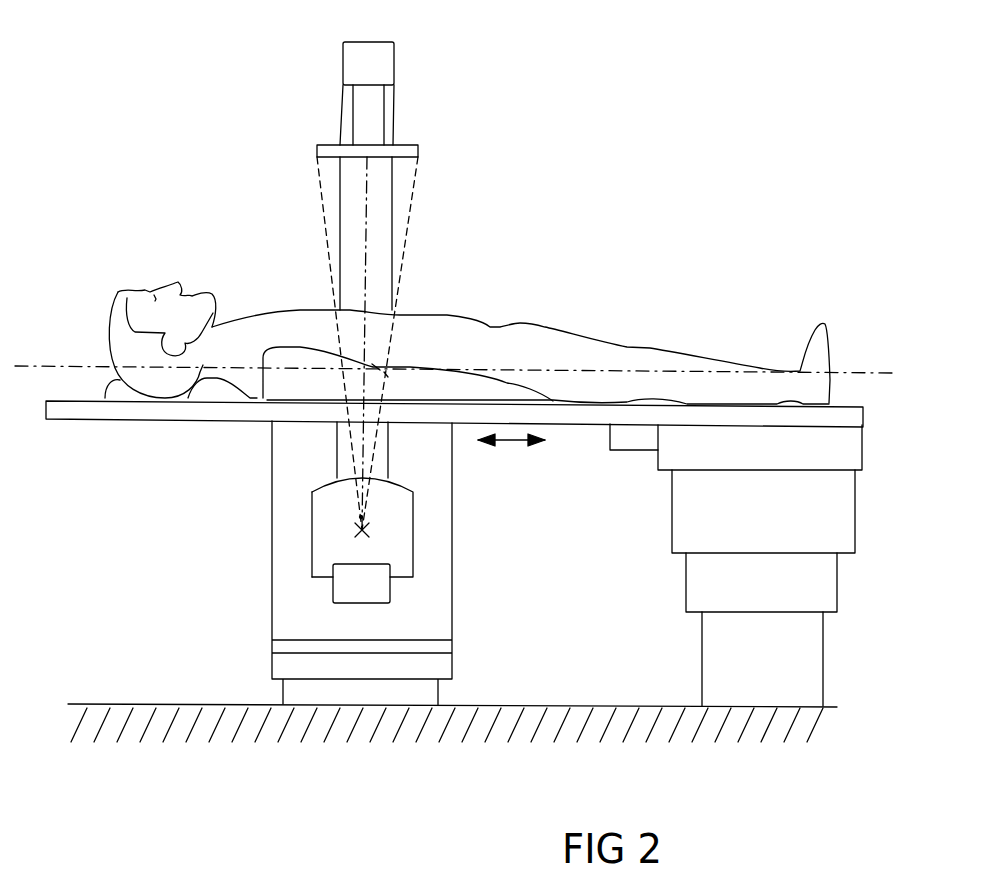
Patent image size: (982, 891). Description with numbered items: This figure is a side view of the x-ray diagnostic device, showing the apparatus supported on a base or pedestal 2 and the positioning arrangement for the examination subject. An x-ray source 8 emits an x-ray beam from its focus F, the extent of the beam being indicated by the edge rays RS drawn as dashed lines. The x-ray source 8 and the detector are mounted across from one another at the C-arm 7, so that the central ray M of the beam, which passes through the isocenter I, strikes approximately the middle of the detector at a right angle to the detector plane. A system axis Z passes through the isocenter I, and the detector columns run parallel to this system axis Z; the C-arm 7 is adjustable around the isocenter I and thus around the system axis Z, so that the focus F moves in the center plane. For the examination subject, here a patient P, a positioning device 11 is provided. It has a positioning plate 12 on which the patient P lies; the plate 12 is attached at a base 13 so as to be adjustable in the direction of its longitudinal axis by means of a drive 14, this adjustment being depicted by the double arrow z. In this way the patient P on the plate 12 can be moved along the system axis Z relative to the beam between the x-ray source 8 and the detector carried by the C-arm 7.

The C-arm 7 is at (368, 42).
The edge rays RS is at (317, 168).
The system axis Z is at (857, 375).
The positioning plate 12 is at (217, 413).
The patient P is at (293, 307).
The central ray M is at (174, 320).
The isocenter I is at (387, 365).
The pedestal 2 is at (283, 598).
The x-ray source 8 is at (322, 552).
The focus F is at (353, 527).
The double arrow z is at (512, 441).
The drive 14 is at (622, 445).
The positioning device 11 is at (652, 569).
The base 13 is at (717, 648).